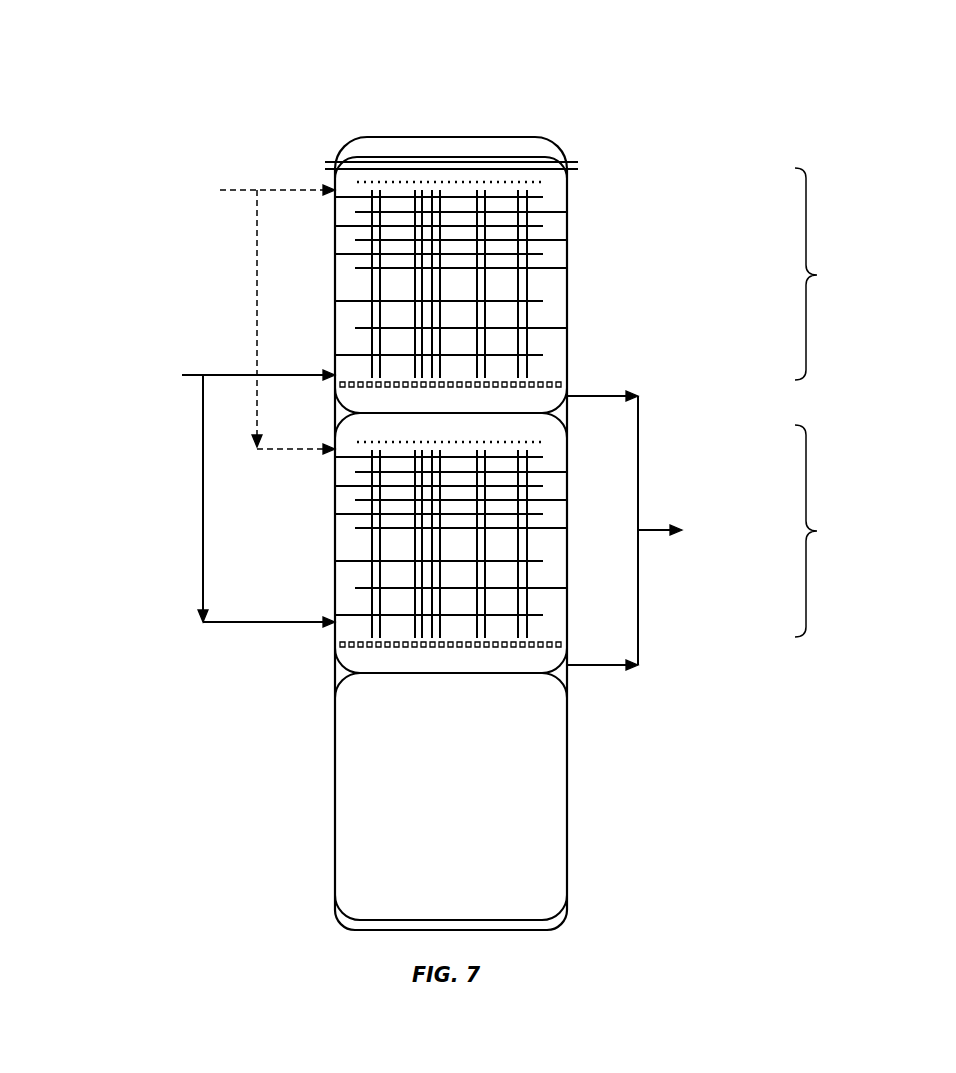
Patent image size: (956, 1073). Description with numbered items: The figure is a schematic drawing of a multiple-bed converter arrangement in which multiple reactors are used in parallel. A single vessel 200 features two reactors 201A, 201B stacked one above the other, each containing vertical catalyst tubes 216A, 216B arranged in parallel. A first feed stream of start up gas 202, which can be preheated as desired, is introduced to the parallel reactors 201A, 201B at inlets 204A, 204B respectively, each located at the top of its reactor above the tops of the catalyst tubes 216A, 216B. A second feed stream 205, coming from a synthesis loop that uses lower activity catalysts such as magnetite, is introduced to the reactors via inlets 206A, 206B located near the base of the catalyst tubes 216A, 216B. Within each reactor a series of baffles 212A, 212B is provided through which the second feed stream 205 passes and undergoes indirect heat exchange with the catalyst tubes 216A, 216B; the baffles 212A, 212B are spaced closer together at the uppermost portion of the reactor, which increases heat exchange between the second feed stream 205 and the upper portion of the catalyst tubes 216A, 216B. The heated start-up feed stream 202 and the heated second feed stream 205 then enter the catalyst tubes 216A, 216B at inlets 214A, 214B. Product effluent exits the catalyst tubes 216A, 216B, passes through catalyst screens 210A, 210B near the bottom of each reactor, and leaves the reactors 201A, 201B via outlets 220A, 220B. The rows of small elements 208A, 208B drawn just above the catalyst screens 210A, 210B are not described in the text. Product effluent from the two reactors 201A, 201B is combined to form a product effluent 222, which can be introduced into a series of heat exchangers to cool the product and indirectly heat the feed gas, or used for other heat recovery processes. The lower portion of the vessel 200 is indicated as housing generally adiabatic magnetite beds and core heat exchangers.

The vessel 200 is at (277, 50).
The reactor 201A is at (835, 274).
The reactor 201B is at (835, 531).
The start up gas 202 is at (143, 162).
The inlet 204A is at (335, 181).
The inlet 204B is at (333, 455).
The second feed stream 205 is at (93, 326).
The inlet 206A is at (250, 373).
The inlet 206B is at (250, 625).
The support grid of first section 208A is at (555, 378).
The support grid of second section 208B is at (555, 638).
The catalyst screen 210A is at (548, 390).
The catalyst screen 210B is at (548, 650).
The baffles 212A is at (347, 256).
The baffles 212B is at (346, 515).
The inlet 214A is at (522, 192).
The inlet 214B is at (522, 452).
The vertical catalyst tubes 216A is at (527, 278).
The vertical catalyst tubes 216B is at (527, 538).
The outlet 220A is at (612, 398).
The outlet 220B is at (612, 667).
The product effluent 222 is at (717, 574).